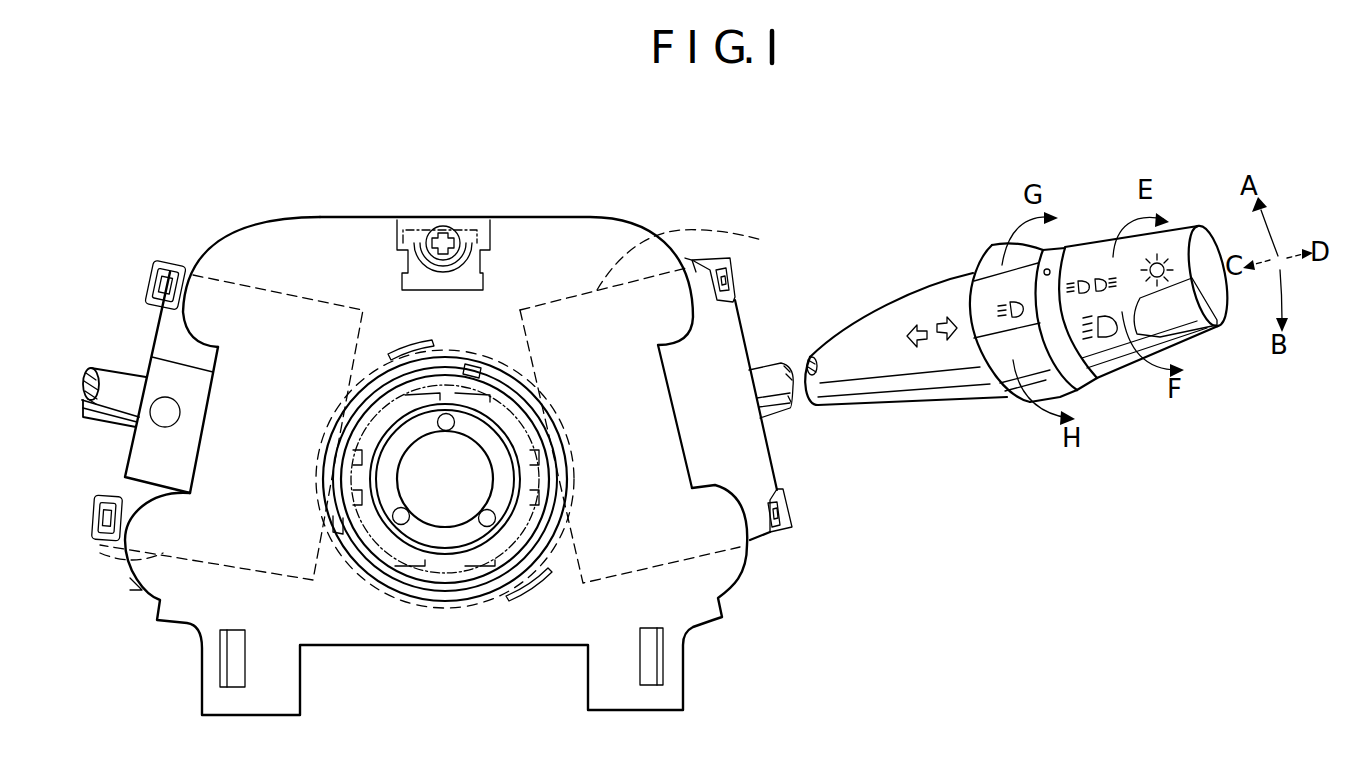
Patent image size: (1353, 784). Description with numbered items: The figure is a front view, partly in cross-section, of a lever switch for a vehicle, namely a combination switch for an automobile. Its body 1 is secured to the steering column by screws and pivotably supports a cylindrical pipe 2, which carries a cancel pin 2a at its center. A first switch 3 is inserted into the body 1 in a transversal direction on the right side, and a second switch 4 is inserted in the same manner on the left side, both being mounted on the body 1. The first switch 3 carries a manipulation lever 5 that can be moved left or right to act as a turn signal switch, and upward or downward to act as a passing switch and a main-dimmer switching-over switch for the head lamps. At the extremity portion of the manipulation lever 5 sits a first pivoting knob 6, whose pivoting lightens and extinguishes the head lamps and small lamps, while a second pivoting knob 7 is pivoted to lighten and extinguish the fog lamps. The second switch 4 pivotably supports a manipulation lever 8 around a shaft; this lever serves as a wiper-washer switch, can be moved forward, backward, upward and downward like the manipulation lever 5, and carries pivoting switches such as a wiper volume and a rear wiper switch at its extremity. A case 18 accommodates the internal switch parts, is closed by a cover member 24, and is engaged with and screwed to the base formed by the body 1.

The body 1 is at (541, 217).
The cylindrical pipe 2 is at (417, 530).
The cancel pin 2a is at (444, 431).
The first switch 3 is at (738, 313).
The second switch 4 is at (130, 477).
The manipulation lever 5 is at (920, 404).
The first pivoting knob 6 is at (1090, 237).
The second pivoting knob 7 is at (975, 300).
The manipulation lever 8 is at (120, 378).
The case 18 is at (786, 537).
The cover member 24 is at (757, 457).